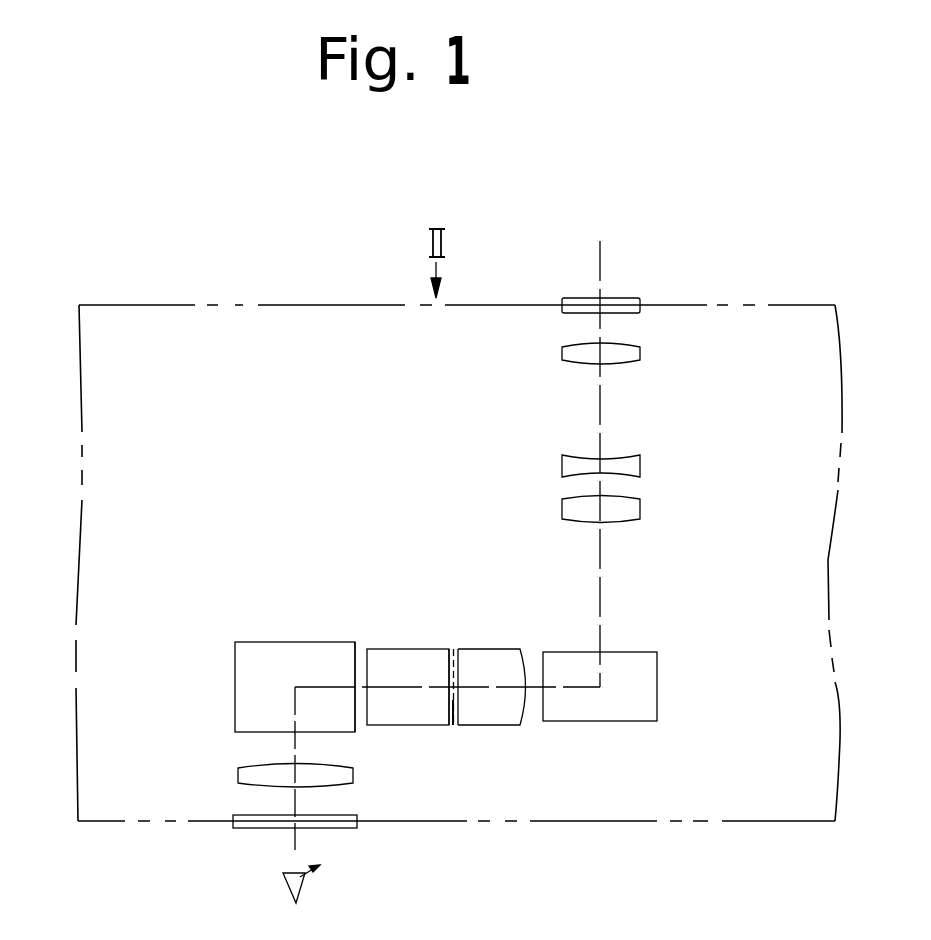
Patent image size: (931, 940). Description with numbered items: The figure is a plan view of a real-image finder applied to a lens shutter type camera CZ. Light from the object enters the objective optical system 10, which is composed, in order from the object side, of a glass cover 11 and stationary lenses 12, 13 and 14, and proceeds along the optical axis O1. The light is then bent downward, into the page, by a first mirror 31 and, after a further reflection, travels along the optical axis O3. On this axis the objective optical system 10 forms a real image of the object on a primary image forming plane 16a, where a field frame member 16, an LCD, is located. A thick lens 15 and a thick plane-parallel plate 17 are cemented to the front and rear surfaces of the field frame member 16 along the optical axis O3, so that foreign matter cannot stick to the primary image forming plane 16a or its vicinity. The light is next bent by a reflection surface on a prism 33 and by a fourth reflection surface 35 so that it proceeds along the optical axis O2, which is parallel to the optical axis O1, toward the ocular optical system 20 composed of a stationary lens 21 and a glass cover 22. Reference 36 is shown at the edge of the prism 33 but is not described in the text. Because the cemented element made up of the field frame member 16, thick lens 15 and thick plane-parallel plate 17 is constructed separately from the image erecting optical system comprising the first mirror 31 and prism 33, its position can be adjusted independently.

The objective optical system 10 is at (725, 330).
The glass cover 11 is at (630, 309).
The stationary lens 12 is at (632, 353).
The stationary lens 13 is at (633, 469).
The stationary lens 14 is at (633, 512).
The thick lens 15 is at (493, 655).
The field frame member 16 is at (453, 649).
The primary image forming plane 16a is at (445, 712).
The thick plane-parallel plate 17 is at (406, 655).
The ocular optical system 20 is at (167, 658).
The stationary lens 21 is at (242, 778).
The glass cover 22 is at (242, 816).
The first mirror 31 is at (657, 700).
The prism 33 is at (233, 669).
The fourth reflection surface 35 is at (293, 648).
The reflecting surface 36 is at (358, 653).
The lens shutter type camera CZ is at (327, 315).
The optical axis of objective optical system O1 is at (598, 418).
The optical axis of ocular optical system O2 is at (297, 802).
The optical axis O3 is at (537, 688).